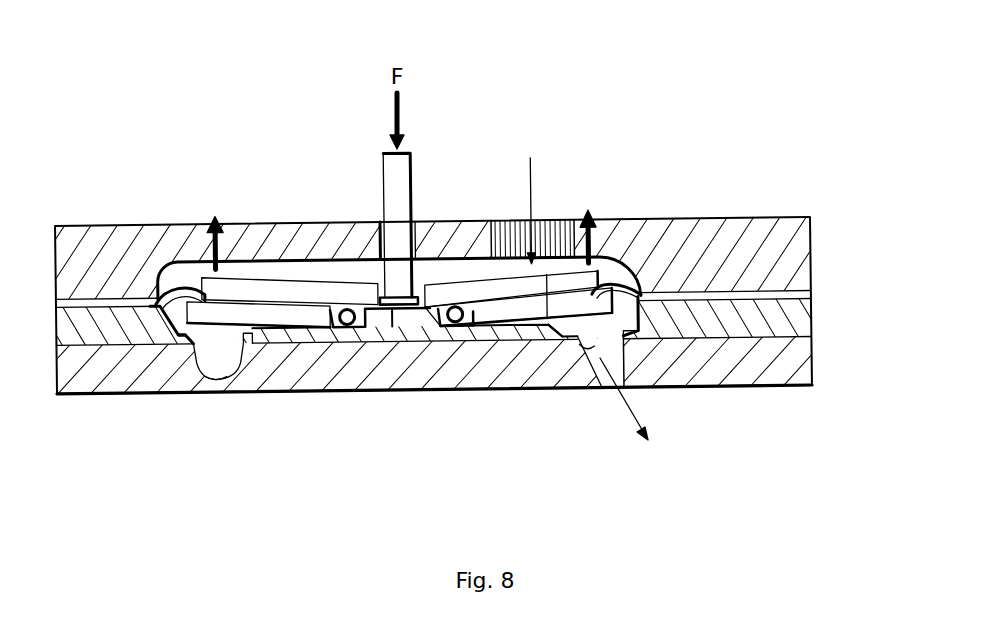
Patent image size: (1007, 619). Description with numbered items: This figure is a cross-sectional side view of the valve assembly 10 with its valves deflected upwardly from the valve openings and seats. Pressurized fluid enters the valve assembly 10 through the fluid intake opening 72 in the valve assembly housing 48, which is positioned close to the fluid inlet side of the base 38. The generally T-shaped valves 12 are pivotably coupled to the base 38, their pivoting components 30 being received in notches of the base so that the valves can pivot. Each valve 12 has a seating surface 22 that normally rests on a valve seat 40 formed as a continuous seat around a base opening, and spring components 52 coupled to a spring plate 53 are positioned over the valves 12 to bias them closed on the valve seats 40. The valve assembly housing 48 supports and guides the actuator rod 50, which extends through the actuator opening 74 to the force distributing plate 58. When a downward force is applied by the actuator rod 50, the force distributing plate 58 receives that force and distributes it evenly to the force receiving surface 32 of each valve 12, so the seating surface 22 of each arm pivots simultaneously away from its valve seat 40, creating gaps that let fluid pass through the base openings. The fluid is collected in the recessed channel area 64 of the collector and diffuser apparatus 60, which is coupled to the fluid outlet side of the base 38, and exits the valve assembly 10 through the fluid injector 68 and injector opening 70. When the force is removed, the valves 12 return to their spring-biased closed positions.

The valve assembly 10 is at (598, 94).
The valve 12 is at (604, 266).
The seating surface 22 is at (213, 377).
The pivoting component 30 is at (356, 325).
The force receiving surface 32 is at (374, 278).
The base 38 is at (803, 313).
The valve seat 40 is at (187, 334).
The valve assembly housing 48 is at (797, 263).
The actuator rod 50 is at (413, 160).
The spring component 52 is at (107, 297).
The spring plate 53 is at (810, 292).
The force distributing plate 58 is at (400, 283).
The collector and diffuser apparatus 60 is at (803, 360).
The recessed channel area 64 is at (237, 360).
The fluid injector 68 is at (590, 322).
The injector opening 70 is at (607, 387).
The fluid intake opening 72 is at (557, 255).
The actuator opening 74 is at (378, 282).